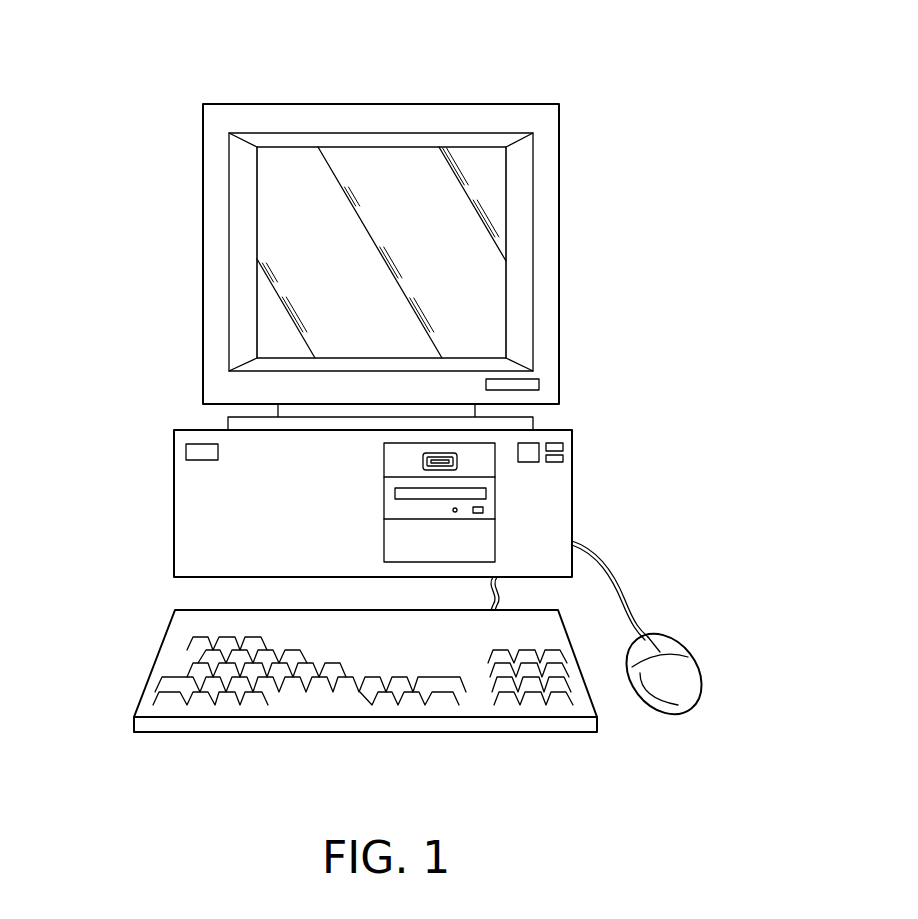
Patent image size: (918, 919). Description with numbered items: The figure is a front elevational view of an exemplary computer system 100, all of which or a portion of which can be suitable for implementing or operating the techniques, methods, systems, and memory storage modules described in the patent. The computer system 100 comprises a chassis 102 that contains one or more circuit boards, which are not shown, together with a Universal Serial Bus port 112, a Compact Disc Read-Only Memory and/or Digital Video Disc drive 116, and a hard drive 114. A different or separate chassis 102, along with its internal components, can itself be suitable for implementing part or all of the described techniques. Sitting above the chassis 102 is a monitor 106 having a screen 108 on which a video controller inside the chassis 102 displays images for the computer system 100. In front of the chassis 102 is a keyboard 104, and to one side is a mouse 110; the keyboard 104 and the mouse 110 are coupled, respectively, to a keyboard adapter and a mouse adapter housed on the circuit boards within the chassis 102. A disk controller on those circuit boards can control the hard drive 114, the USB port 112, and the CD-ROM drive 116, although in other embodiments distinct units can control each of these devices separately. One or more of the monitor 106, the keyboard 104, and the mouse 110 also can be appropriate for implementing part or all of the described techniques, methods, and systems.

The computer system 100 is at (552, 82).
The chassis 102 is at (175, 505).
The keyboard 104 is at (158, 658).
The monitor 106 is at (275, 103).
The screen 108 is at (302, 255).
The mouse 110 is at (683, 665).
The Universal Serial Bus (USB) port 112 is at (457, 456).
The hard drive 114 is at (487, 539).
The Compact Disc Read-Only Memory (CD-ROM) and/or Digital Video Disc (DVD) drive 116 is at (487, 500).